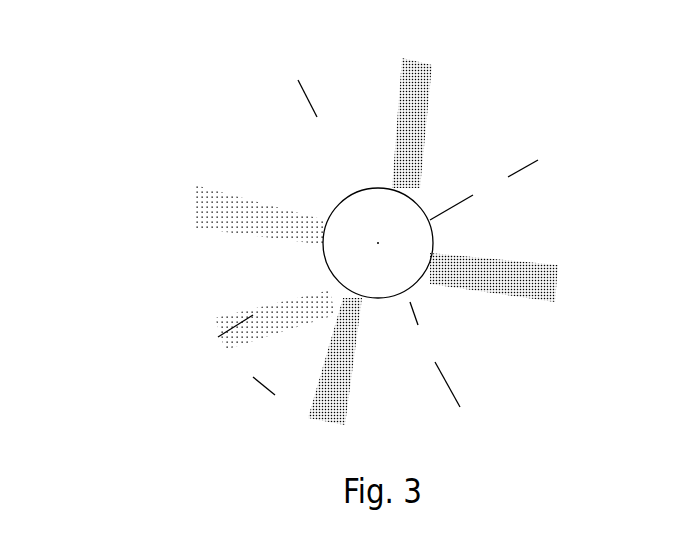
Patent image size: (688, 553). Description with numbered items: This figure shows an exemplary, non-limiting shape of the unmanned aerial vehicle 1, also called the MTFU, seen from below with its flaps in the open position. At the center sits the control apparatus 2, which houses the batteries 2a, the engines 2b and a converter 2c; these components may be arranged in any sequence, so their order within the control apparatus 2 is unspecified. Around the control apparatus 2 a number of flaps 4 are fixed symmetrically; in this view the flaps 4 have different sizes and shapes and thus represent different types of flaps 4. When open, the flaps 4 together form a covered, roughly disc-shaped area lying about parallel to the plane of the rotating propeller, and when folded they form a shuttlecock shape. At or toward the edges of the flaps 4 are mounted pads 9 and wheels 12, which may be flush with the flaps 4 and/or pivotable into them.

The unmanned aerial vehicle 1 is at (402, 369).
The control apparatus 2 is at (362, 223).
The batteries 2a is at (308, 283).
The engines 2b is at (280, 303).
The converter 2c is at (243, 322).
The flaps 4 is at (420, 102).
The pads 9 is at (275, 395).
The wheels 12 is at (515, 333).